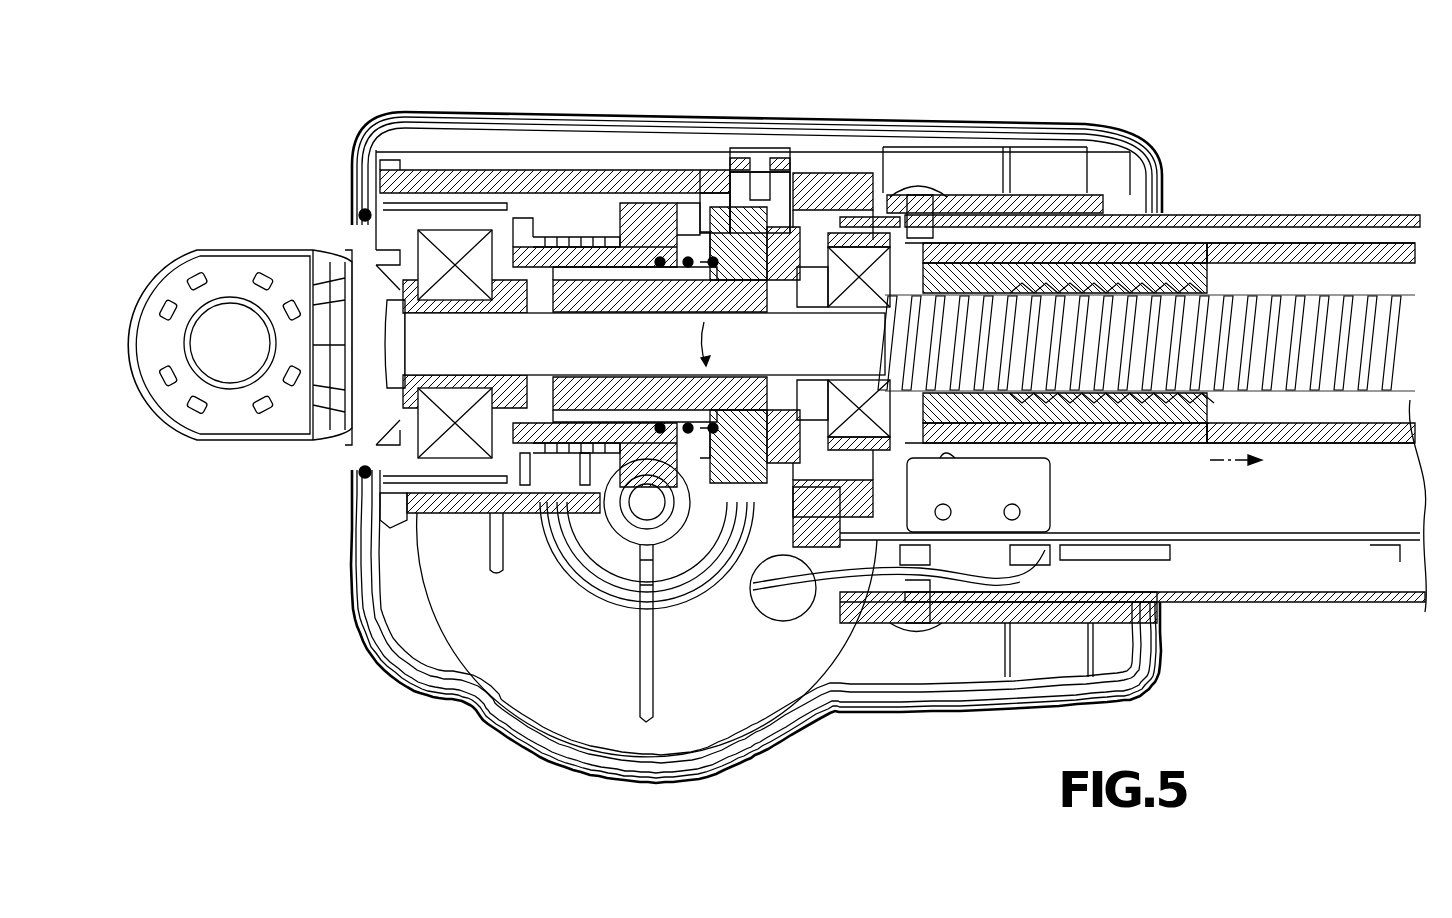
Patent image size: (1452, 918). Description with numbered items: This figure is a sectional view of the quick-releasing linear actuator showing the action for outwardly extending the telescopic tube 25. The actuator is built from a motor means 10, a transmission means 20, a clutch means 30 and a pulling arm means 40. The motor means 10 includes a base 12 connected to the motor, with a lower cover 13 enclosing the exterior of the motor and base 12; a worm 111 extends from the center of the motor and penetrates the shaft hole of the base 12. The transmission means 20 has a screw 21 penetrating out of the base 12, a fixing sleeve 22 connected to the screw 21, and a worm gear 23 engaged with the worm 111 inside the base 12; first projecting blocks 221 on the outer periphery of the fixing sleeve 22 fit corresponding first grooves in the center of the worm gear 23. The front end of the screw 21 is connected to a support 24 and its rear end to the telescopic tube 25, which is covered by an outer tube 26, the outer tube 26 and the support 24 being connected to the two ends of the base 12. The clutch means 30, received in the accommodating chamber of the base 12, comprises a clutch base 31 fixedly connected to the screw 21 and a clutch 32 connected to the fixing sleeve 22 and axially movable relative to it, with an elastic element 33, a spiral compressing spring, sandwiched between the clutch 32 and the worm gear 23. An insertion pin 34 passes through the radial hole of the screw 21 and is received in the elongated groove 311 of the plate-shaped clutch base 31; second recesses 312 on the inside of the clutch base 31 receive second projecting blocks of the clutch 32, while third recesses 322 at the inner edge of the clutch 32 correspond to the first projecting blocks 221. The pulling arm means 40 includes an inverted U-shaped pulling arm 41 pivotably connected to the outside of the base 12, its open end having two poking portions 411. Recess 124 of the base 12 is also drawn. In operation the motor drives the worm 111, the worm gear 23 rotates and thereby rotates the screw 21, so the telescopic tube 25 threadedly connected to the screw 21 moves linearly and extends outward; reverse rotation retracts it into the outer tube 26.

The motor means 10 is at (362, 665).
The base 12 is at (447, 180).
The lower cover 13 is at (925, 705).
The transmission means 20 is at (392, 283).
The screw 21 is at (659, 355).
The fixing sleeve 22 is at (600, 295).
The worm gear 23 is at (515, 215).
The first projecting blocks 221 is at (565, 235).
The support 24 is at (232, 275).
The telescopic tube 25 is at (1307, 250).
The outer tube 26 is at (1243, 215).
The clutch means 30 is at (838, 470).
The clutch base 31 is at (785, 290).
The clutch 32 is at (742, 258).
The elastic element 33 is at (600, 210).
The insertion pin 34 is at (812, 290).
The pulling arm means 40 is at (755, 150).
The pulling arm 41 is at (781, 165).
The worm 111 is at (645, 507).
The cover recess 124 is at (705, 195).
The elongated groove 311 is at (817, 222).
The second recesses 312 is at (820, 200).
The third recesses 322 is at (690, 230).
The poking portions 411 is at (733, 185).